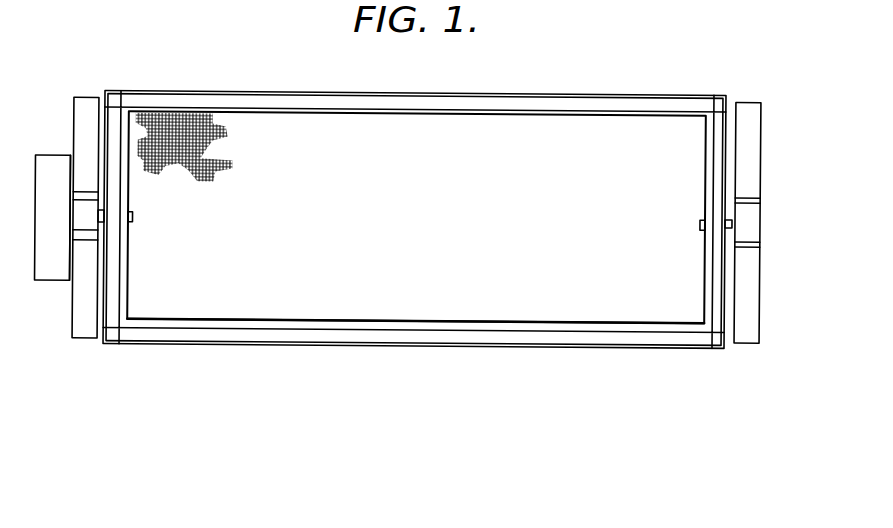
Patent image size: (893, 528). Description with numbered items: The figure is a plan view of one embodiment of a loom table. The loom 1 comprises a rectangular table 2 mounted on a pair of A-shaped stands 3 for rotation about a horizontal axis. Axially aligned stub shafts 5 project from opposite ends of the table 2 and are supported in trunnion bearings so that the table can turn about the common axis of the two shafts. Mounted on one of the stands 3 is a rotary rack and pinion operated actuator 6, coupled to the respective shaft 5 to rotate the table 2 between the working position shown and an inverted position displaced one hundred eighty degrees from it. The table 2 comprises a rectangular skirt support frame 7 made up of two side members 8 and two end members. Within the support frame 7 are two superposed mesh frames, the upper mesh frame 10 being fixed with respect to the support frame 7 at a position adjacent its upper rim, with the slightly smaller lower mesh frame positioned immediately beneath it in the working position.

The loom 1 is at (562, 72).
The rectangular table 2 is at (458, 352).
The A-shaped stand 3 is at (76, 318).
The stub shaft 5 is at (730, 221).
The rotary rack and pinion operated actuator 6 is at (50, 157).
The skirt support frame 7 is at (684, 98).
The side member 8 is at (291, 345).
The upper mesh frame 10 is at (255, 139).